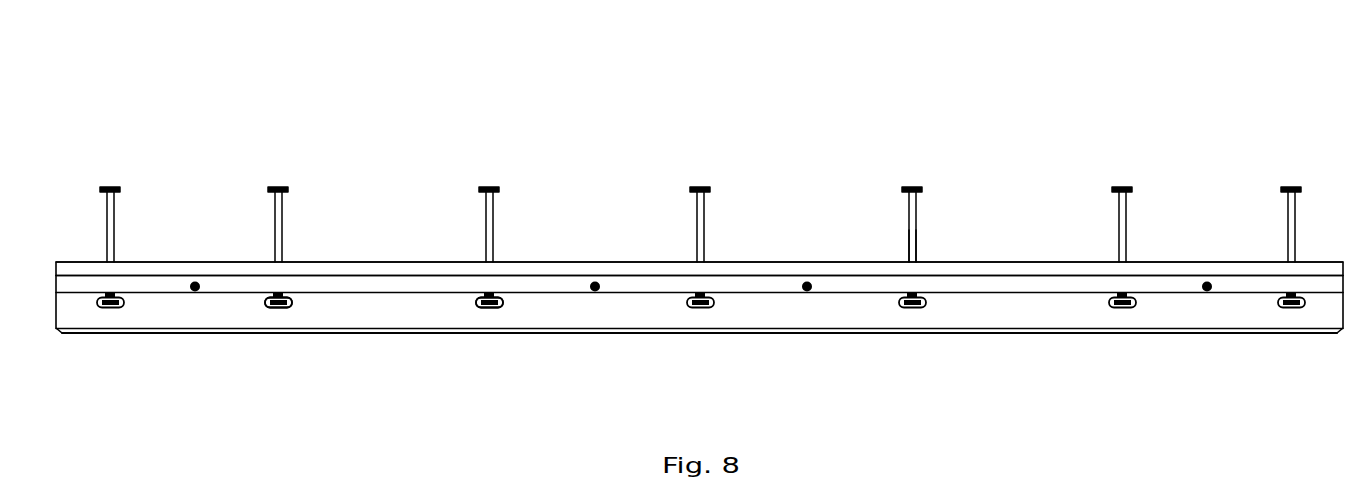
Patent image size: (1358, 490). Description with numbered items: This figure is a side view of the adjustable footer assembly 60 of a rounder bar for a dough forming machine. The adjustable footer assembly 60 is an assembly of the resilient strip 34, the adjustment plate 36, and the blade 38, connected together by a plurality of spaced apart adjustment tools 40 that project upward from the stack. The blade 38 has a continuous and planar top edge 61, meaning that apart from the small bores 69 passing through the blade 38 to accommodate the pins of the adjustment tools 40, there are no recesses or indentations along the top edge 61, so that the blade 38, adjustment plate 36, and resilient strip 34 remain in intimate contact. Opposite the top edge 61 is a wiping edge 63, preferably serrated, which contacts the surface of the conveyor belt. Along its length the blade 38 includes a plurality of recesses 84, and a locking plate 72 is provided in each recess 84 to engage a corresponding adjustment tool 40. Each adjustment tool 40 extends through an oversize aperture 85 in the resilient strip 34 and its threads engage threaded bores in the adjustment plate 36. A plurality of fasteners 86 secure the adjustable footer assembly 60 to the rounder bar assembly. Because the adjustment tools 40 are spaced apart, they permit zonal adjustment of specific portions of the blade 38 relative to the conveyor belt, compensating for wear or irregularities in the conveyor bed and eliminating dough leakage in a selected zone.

The adjustable footer assembly 60 is at (215, 115).
The top edge 61 is at (378, 291).
The wiping edge 63 is at (385, 336).
The bores 69 is at (118, 296).
The recesses 84 is at (293, 303).
The locking plate 72 is at (490, 308).
The fasteners 86 is at (810, 290).
The oversize aperture 85 is at (906, 261).
The adjustment tools 40 is at (912, 187).
The adjustment plate 36 is at (1025, 290).
The resilient strip 34 is at (1185, 272).
The blade 38 is at (1172, 323).